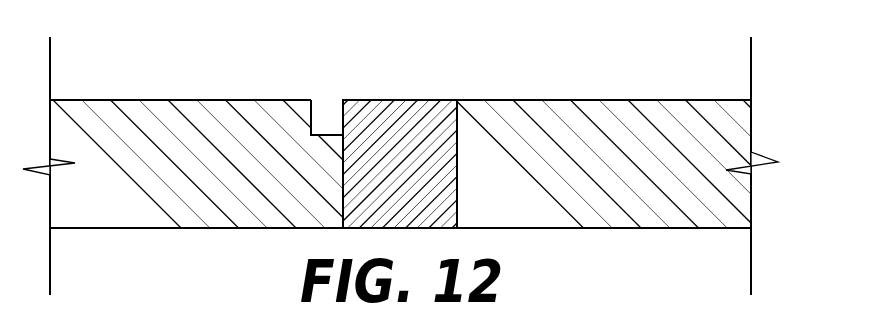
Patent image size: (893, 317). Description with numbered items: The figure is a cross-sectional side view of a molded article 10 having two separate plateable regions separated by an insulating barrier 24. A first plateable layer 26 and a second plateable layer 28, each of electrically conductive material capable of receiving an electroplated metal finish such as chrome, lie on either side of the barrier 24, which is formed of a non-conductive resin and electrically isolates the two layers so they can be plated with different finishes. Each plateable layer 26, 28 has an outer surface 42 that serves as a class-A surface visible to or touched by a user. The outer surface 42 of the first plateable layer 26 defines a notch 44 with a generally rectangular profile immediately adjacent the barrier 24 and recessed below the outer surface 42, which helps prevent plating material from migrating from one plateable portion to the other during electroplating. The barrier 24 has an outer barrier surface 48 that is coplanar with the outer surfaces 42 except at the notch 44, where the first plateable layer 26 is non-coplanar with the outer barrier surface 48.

The molded article 10 is at (446, 148).
The barrier 24 is at (395, 132).
The first plateable layer 26 is at (115, 152).
The second plateable layer 28 is at (688, 152).
The outer surface 42 is at (203, 100).
The notch 44 is at (327, 118).
The outer barrier surface 48 is at (433, 100).